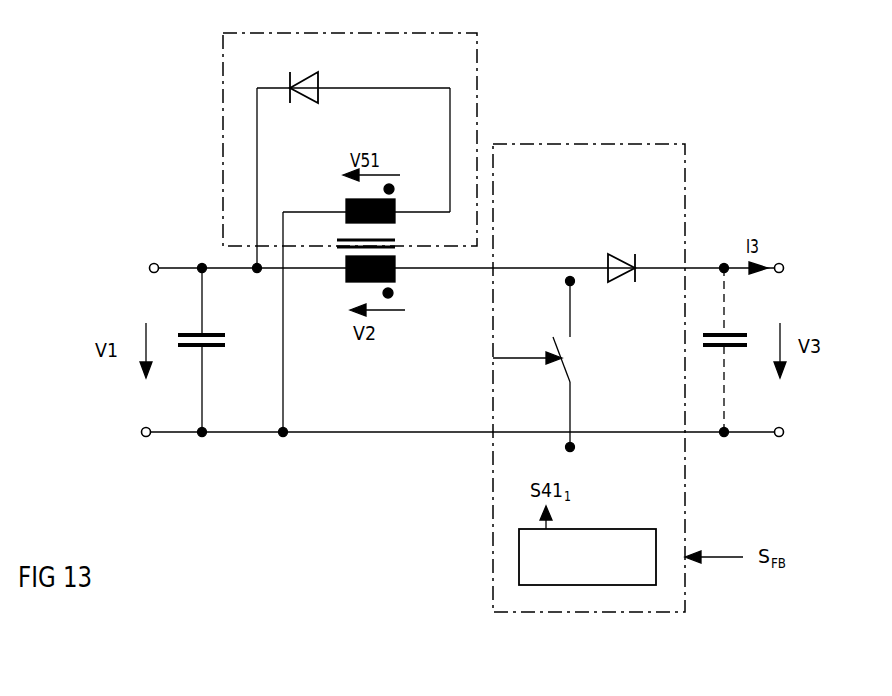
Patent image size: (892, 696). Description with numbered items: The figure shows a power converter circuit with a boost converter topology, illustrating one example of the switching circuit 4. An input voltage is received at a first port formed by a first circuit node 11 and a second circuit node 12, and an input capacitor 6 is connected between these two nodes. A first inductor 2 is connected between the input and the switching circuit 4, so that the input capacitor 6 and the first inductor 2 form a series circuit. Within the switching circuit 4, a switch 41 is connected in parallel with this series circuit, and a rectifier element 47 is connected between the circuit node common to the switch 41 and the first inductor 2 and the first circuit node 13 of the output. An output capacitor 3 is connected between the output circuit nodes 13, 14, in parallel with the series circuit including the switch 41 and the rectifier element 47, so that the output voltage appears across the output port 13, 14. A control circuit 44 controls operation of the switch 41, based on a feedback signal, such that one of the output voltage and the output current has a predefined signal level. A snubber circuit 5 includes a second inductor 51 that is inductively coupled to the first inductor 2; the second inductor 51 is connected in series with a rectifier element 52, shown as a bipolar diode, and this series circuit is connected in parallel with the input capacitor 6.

The first inductor 2 is at (352, 283).
The output capacitor 3 is at (737, 330).
The switching circuit 4 is at (590, 144).
The snubber circuit 5 is at (477, 95).
The input capacitor 6 is at (220, 332).
The first circuit node 11 is at (137, 265).
The second circuit node 12 is at (135, 435).
The first circuit node of the output 13 is at (790, 263).
The second circuit node of the output 14 is at (790, 435).
The switch 41 is at (570, 352).
The control circuit 44 is at (623, 529).
The rectifier element 47 is at (617, 255).
The second inductor 51 is at (347, 202).
The rectifier element 52 is at (318, 82).